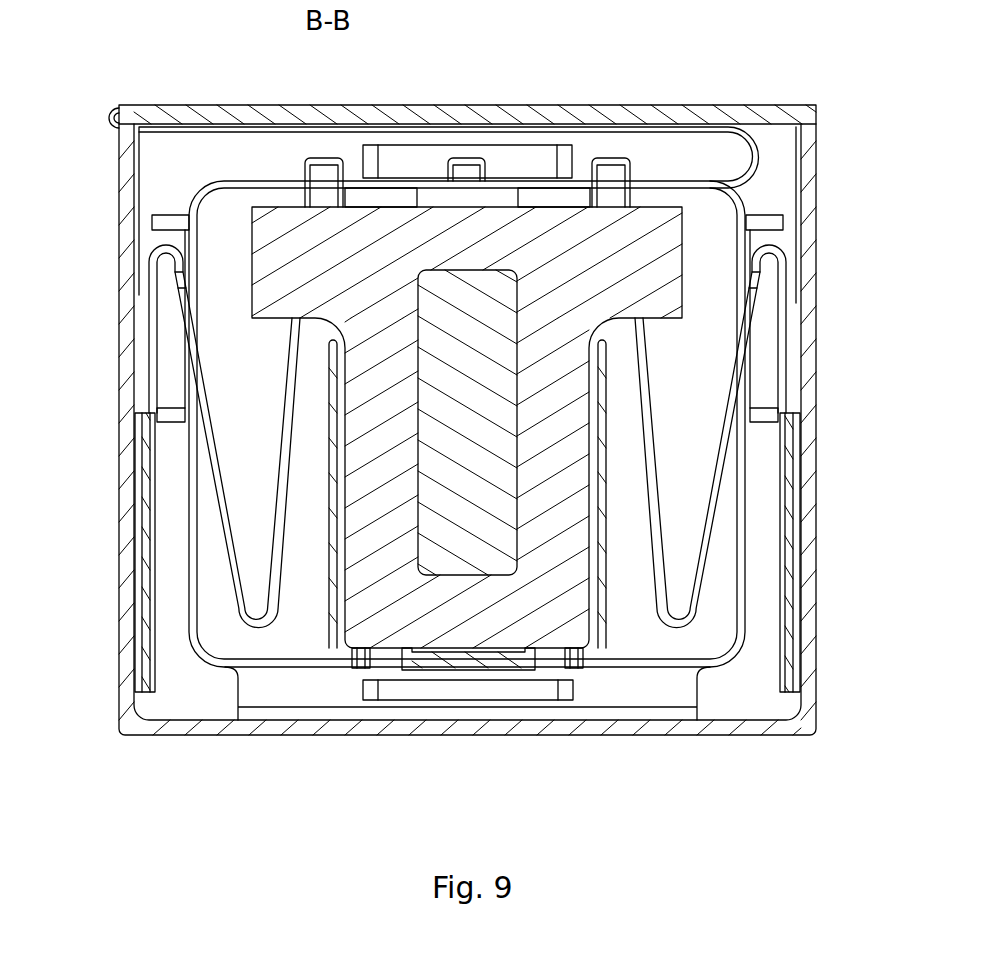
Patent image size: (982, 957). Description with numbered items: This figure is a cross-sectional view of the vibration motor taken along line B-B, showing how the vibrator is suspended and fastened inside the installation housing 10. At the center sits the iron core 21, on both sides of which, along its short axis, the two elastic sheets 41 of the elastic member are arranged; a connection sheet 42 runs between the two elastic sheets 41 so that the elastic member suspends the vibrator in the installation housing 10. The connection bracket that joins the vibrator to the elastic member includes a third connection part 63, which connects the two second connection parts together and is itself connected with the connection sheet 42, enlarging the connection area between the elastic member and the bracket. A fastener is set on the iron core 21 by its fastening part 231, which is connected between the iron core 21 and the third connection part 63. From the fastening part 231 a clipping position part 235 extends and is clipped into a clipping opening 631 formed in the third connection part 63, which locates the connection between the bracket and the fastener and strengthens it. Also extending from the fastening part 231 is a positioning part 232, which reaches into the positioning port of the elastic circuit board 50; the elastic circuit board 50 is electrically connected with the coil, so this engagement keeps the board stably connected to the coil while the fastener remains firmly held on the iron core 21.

The installation housing 10 is at (127, 168).
The elastic circuit board 50 is at (760, 160).
The iron core 21 is at (470, 325).
The fastening part 231 is at (553, 345).
The positioning part 232 is at (323, 183).
The elastic sheet 41 is at (212, 465).
The connection sheet 42 is at (357, 673).
The clipping position part 235 is at (382, 660).
The third connection part 63 is at (465, 663).
The clipping opening 631 is at (578, 658).